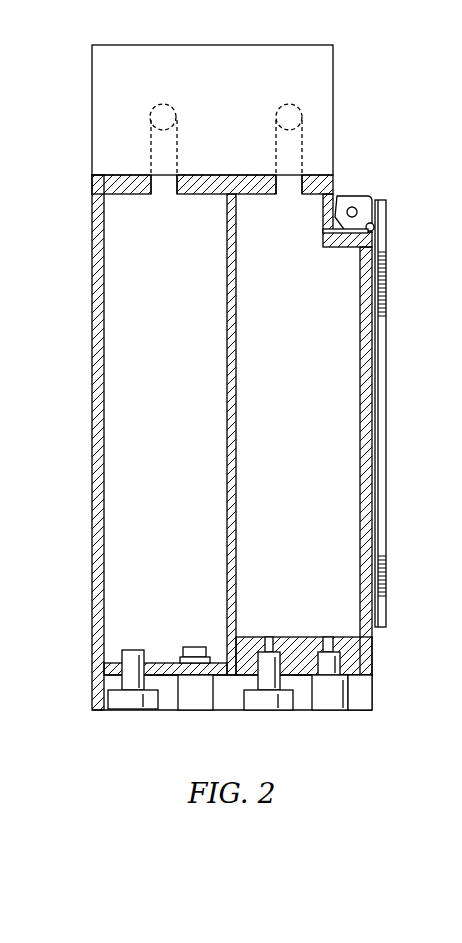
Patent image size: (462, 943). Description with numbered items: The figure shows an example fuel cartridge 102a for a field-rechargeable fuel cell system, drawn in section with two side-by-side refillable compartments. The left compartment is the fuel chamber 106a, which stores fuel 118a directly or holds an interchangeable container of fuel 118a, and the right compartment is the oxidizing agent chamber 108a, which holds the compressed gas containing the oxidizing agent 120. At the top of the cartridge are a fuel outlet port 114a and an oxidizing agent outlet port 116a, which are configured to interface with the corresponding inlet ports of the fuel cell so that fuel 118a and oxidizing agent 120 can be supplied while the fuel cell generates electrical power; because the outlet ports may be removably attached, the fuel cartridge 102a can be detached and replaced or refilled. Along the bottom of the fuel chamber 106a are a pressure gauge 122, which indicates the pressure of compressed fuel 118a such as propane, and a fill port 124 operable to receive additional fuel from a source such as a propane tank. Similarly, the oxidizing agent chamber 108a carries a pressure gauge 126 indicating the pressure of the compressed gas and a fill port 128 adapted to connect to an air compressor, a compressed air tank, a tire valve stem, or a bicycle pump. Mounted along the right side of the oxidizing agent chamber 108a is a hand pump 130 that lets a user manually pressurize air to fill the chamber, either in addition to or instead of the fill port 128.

The fuel cartridge 102a is at (91, 367).
The fuel outlet port 114a is at (156, 106).
The oxidizing agent outlet port 116a is at (300, 108).
The fuel 118a is at (115, 283).
The oxidizing agent 120 is at (338, 482).
The hand pump 130 is at (386, 256).
The pressure gauge 122 is at (128, 712).
The fill port 124 is at (194, 712).
The fuel chamber 106a is at (167, 713).
The pressure gauge 126 is at (268, 712).
The oxidizing agent chamber 108a is at (305, 713).
The fill port 128 is at (332, 712).